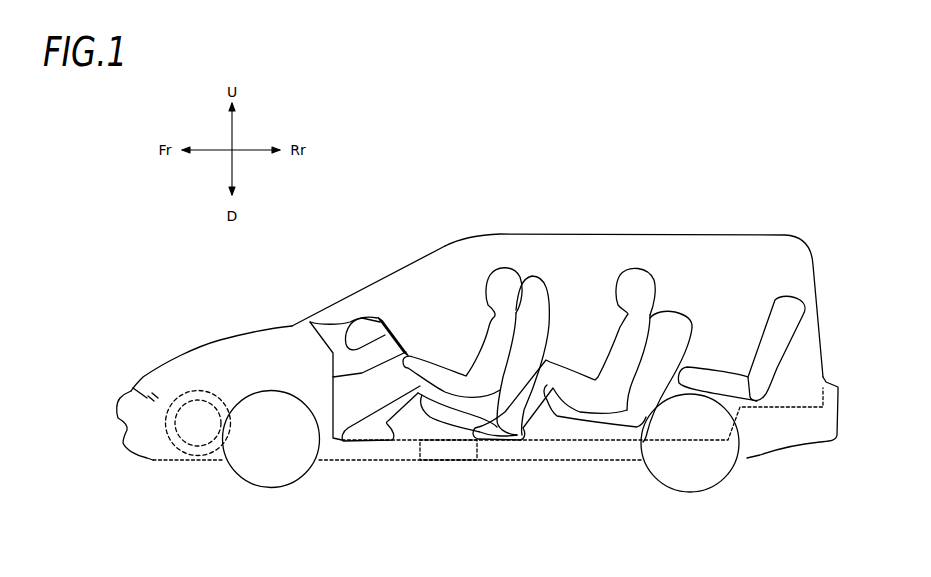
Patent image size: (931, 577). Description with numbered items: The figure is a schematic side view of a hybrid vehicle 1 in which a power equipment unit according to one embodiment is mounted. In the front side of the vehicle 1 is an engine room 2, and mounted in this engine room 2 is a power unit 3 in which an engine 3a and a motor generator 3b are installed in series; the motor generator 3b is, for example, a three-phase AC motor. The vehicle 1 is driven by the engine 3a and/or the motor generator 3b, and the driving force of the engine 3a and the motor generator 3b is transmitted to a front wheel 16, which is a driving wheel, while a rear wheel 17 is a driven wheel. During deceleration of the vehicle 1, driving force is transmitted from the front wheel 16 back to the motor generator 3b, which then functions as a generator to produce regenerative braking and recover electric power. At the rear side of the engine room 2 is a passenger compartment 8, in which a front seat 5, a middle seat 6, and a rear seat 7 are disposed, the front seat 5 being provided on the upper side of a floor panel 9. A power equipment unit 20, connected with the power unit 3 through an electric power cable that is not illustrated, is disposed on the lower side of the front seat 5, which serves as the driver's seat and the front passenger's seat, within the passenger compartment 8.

The vehicle 1 is at (545, 183).
The engine room 2 is at (133, 388).
The power unit 3 is at (187, 410).
The engine 3a is at (173, 442).
The motor generator 3b is at (200, 432).
The front seat 5 is at (510, 392).
The middle seat 6 is at (633, 417).
The rear seat 7 is at (768, 357).
The passenger compartment 8 is at (582, 287).
The floor panel 9 is at (566, 434).
The front wheel 16 is at (267, 470).
The rear wheel 17 is at (687, 475).
The power equipment unit 20 is at (440, 463).